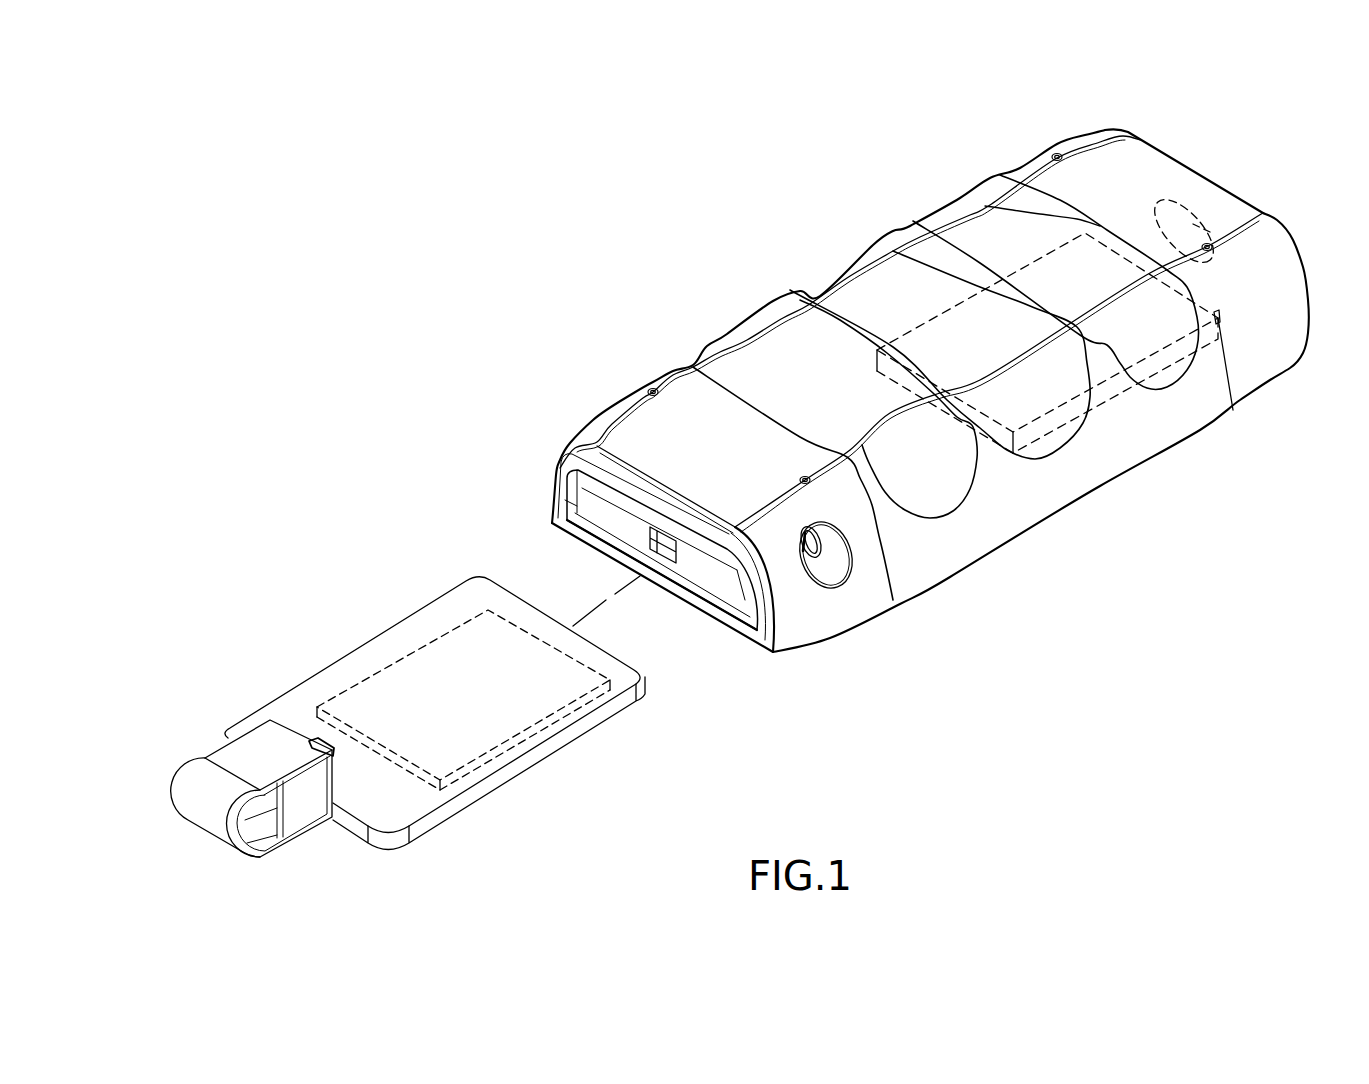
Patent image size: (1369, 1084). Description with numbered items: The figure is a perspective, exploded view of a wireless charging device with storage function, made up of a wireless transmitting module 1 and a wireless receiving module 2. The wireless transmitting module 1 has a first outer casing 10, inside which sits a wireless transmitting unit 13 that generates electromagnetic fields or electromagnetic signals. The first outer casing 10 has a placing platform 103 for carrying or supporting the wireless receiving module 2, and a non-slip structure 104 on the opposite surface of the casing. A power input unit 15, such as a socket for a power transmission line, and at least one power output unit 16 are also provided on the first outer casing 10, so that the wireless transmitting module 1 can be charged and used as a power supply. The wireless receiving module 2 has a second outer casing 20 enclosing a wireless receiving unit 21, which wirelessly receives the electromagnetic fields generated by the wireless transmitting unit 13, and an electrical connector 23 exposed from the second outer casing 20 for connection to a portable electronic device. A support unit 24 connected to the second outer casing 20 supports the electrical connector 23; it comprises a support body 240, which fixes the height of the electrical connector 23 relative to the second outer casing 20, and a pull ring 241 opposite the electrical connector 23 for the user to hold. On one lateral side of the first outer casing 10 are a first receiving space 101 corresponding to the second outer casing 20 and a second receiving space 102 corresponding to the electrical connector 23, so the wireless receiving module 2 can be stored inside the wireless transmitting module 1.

The wireless transmitting module 1 is at (789, 266).
The first outer casing 10 is at (1140, 163).
The first receiving space 101 is at (697, 592).
The second receiving space 102 is at (655, 535).
The placing platform 103 is at (1055, 522).
The non-slip structure 104 is at (952, 256).
The wireless transmitting unit 13 is at (1107, 398).
The power input unit 15 is at (1205, 222).
The power output unit 16 is at (833, 556).
The wireless receiving module 2 is at (283, 674).
The second outer casing 20 is at (424, 630).
The wireless receiving unit 21 is at (526, 738).
The electrical connector 23 is at (352, 712).
The support unit 24 is at (257, 755).
The support body 240 is at (305, 803).
The pull ring 241 is at (193, 788).